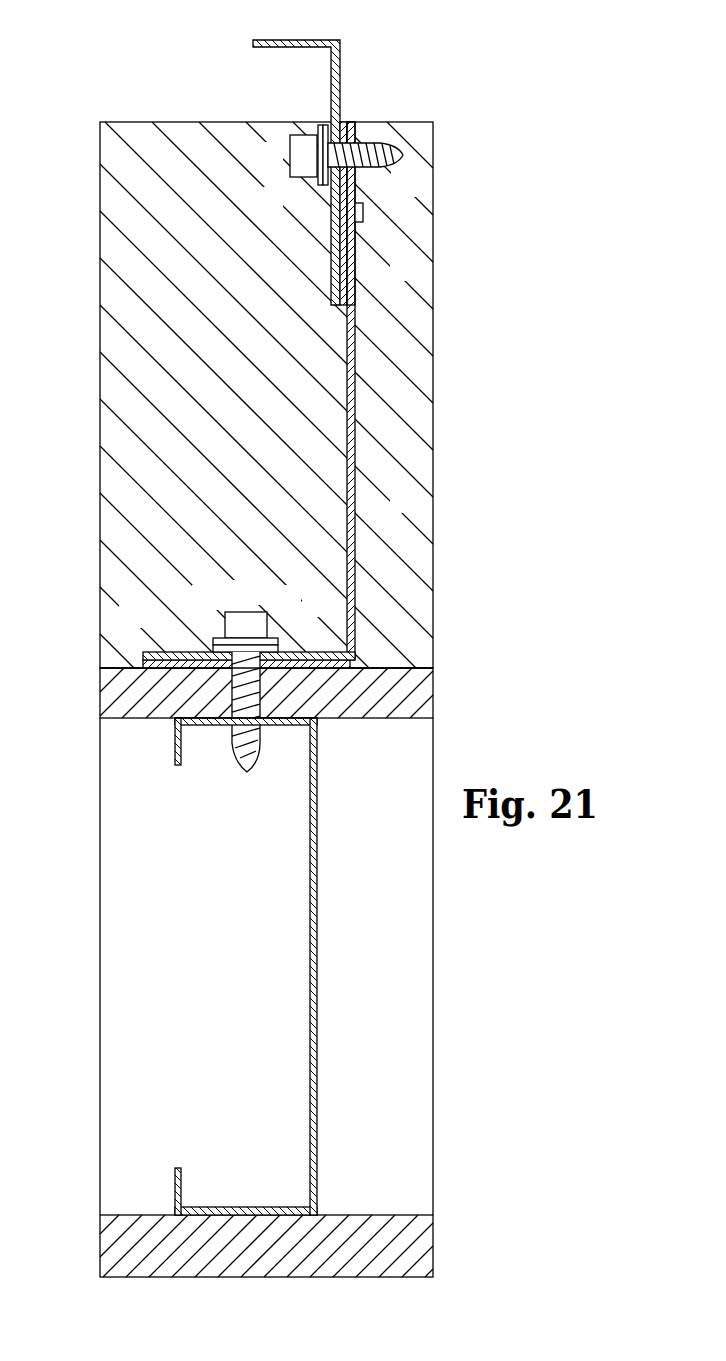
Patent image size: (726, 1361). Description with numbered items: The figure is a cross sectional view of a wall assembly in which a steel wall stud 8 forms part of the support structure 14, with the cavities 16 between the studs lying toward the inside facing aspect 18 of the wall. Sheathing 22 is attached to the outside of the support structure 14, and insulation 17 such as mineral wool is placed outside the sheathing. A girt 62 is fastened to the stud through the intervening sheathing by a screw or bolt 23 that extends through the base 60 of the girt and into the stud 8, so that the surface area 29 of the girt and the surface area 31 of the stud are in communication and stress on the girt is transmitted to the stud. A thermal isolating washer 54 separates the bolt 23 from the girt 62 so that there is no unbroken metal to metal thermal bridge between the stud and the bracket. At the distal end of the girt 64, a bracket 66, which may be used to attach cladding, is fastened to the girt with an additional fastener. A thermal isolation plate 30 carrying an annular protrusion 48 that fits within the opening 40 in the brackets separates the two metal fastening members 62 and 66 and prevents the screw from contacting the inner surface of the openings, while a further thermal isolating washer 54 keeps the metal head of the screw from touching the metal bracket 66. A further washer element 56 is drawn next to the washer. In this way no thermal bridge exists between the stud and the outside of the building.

The wall stud 8 is at (318, 884).
The support structure 14 is at (318, 1150).
The cavity 16 is at (217, 966).
The insulation 17 is at (433, 385).
The inside facing aspect 18 is at (205, 1215).
The sheathing 22 is at (100, 680).
The screw or bolt 23 is at (393, 152).
The surface area of the girt 29 is at (314, 670).
The thermal isolation plate 30 is at (341, 127).
The surface area of the stud 31 is at (205, 720).
The opening 40 is at (358, 182).
The annular protrusion 48 is at (318, 165).
The thermal isolating washer 54 is at (321, 128).
The gasket / second washer 56 is at (320, 186).
The base of the girt 60 is at (322, 652).
The girt 62 is at (356, 500).
The distal end of the girt 64 is at (356, 270).
The bracket 66 is at (318, 42).